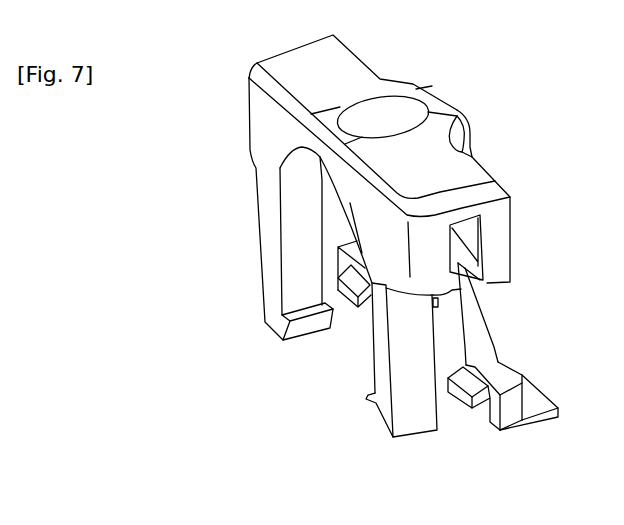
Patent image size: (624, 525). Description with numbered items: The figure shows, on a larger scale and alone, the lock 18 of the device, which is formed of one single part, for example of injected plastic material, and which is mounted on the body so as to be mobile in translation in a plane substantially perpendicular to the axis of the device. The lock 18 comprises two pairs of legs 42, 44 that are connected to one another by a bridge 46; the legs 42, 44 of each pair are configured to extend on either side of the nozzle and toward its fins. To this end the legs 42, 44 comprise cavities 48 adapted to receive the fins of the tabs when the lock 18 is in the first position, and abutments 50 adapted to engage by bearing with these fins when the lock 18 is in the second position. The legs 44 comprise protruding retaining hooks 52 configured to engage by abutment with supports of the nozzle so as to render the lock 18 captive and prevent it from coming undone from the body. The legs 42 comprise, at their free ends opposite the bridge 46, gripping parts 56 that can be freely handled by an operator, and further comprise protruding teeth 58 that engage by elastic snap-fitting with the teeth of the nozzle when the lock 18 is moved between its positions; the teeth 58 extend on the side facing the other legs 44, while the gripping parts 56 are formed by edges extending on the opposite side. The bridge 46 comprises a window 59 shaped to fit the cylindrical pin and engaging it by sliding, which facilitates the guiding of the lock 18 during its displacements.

The lock 18 is at (492, 88).
The legs 42 is at (582, 332).
The legs 44 is at (258, 347).
The bridge 46 is at (374, 29).
The cavities 48 is at (410, 336).
The abutments 50 is at (483, 273).
The retaining hooks 52 is at (304, 330).
The gripping parts 56 is at (548, 422).
The teeth 58 is at (452, 397).
The window 59 is at (405, 113).